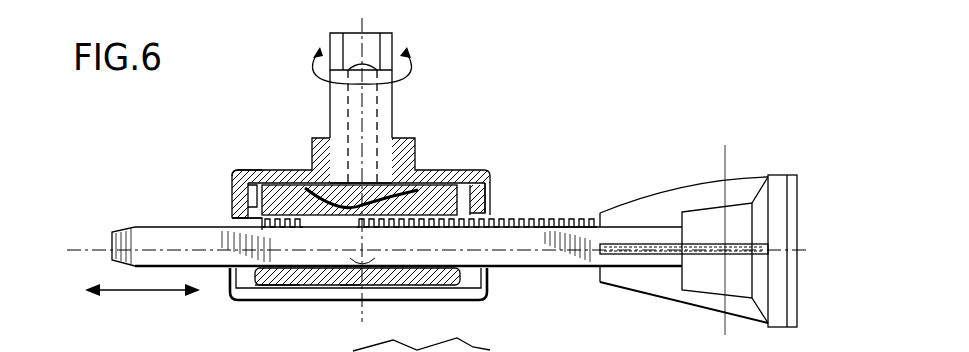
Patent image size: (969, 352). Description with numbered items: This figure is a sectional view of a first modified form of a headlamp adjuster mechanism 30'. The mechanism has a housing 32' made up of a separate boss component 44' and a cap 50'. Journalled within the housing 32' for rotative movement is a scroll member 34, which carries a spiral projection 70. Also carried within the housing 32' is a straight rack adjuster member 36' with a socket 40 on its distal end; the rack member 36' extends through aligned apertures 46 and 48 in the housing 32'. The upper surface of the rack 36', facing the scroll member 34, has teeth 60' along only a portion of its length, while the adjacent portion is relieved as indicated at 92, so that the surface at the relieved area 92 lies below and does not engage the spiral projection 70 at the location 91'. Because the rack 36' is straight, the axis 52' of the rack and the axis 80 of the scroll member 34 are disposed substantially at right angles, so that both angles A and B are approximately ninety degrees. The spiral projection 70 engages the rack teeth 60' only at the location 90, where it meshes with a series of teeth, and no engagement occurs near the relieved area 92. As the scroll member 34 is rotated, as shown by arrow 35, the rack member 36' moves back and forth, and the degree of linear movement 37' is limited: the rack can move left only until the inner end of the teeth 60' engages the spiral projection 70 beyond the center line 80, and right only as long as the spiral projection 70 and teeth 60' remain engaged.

The adjuster mechanism 30' is at (291, 216).
The housing 32' is at (430, 151).
The scroll member 34 is at (388, 114).
The arrow indicating rotation of scroll member 35 is at (312, 80).
The rack adjuster member 36' is at (438, 264).
The linear movement 37' is at (128, 305).
The socket 40 is at (688, 190).
The boss component 44' is at (357, 303).
The aperture 46 is at (220, 235).
The aperture 48 is at (490, 218).
The cap 50' is at (244, 147).
The axis of the rack 52' is at (84, 230).
The teeth 60' is at (571, 197).
The spiral projection 70 is at (280, 205).
The axis of scroll member 80 is at (372, 23).
The location of engagement 90 is at (427, 229).
The location of non-engagement 91' is at (276, 300).
The relieved area 92 is at (320, 222).
The angle A is at (390, 268).
The angle B is at (345, 272).